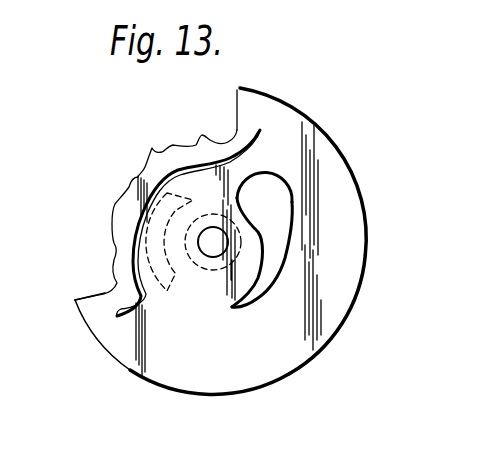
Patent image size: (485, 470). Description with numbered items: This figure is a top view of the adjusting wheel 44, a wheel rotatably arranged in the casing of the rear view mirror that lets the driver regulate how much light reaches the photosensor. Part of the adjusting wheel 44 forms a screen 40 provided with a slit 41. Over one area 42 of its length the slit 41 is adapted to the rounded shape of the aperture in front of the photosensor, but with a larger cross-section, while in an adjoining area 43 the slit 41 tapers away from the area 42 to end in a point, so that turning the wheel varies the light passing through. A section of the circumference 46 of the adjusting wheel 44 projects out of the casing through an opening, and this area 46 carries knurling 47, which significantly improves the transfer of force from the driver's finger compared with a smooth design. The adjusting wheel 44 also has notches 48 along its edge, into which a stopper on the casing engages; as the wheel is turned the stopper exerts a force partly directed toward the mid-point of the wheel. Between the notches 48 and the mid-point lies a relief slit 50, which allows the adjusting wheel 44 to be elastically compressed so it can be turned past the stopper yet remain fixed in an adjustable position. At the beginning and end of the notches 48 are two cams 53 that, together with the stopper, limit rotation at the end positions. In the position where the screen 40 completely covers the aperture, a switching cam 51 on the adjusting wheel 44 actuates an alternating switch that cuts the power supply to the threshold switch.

The screen 40 is at (320, 230).
The slit 41 is at (288, 217).
The area of the slit 42 is at (262, 193).
The area of the slit 43 is at (263, 276).
The adjusting wheel 44 is at (188, 395).
The circumference section 46 is at (323, 320).
The knurling 47 is at (361, 278).
The notches 48 is at (153, 147).
The relief slit 50 is at (133, 231).
The switching cam 51 is at (167, 291).
The cams 53 is at (240, 90).